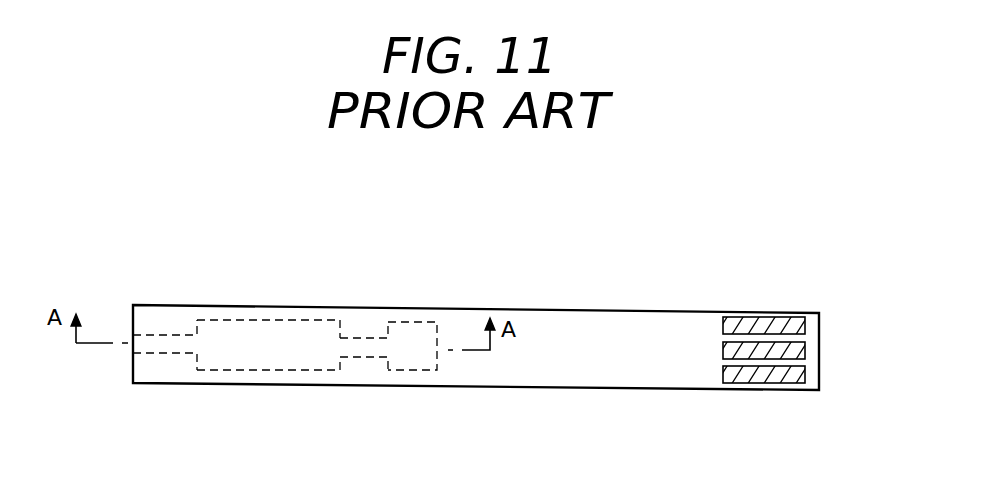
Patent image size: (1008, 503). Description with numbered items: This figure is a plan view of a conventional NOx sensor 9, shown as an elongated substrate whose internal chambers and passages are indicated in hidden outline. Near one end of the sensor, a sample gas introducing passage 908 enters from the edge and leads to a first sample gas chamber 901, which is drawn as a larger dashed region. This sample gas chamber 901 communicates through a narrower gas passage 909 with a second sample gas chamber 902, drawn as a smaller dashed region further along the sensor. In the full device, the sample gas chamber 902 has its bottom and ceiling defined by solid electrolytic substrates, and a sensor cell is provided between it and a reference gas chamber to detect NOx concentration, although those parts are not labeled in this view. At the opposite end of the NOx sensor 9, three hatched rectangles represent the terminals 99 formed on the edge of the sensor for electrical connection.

The NOx sensor 9 is at (377, 284).
The sample gas chamber 901 is at (276, 338).
The sample gas chamber 902 is at (423, 338).
The sample gas introducing passage 908 is at (168, 350).
The gas passage 909 is at (370, 353).
The terminals 99 is at (778, 320).